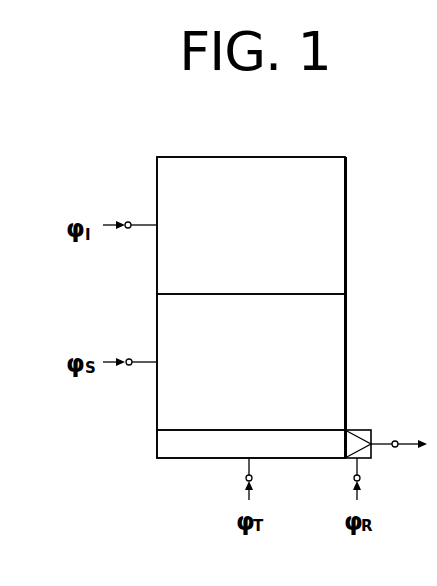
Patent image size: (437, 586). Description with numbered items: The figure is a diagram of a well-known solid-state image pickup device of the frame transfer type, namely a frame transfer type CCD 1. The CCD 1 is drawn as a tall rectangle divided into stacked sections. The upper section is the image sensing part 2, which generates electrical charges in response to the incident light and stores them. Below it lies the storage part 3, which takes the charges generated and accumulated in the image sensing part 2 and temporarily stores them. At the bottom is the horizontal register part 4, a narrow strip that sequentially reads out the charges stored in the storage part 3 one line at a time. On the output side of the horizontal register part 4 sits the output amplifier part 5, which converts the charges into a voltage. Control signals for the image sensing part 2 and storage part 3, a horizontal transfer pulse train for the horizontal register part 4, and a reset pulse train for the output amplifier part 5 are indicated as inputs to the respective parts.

The frame transfer type CCD 1 is at (346, 143).
The image sensing part 2 is at (340, 233).
The storage part 3 is at (338, 360).
The horizontal register part 4 is at (298, 450).
The output amplifier part 5 is at (360, 428).